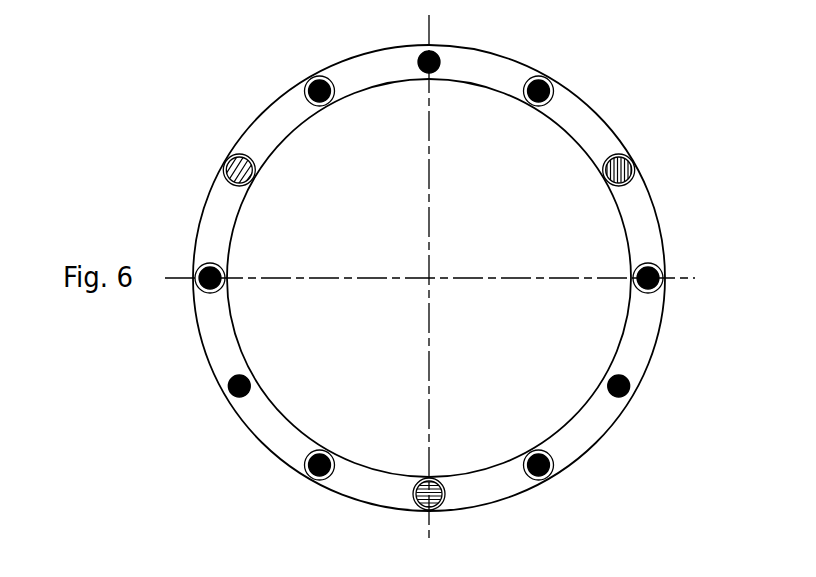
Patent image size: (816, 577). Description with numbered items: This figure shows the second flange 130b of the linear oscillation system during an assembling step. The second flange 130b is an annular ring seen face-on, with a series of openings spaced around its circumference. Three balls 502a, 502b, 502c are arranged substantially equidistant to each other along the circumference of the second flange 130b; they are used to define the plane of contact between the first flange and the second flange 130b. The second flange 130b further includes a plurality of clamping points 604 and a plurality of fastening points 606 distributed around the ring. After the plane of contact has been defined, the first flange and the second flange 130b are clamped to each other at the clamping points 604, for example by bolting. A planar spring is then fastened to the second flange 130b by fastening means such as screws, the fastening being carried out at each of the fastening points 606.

The second flange 130b is at (607, 125).
The ball 502a is at (246, 379).
The ball 502b is at (628, 397).
The ball 502c is at (438, 55).
The clamping point 604 is at (659, 266).
The fastening point 606 is at (443, 505).